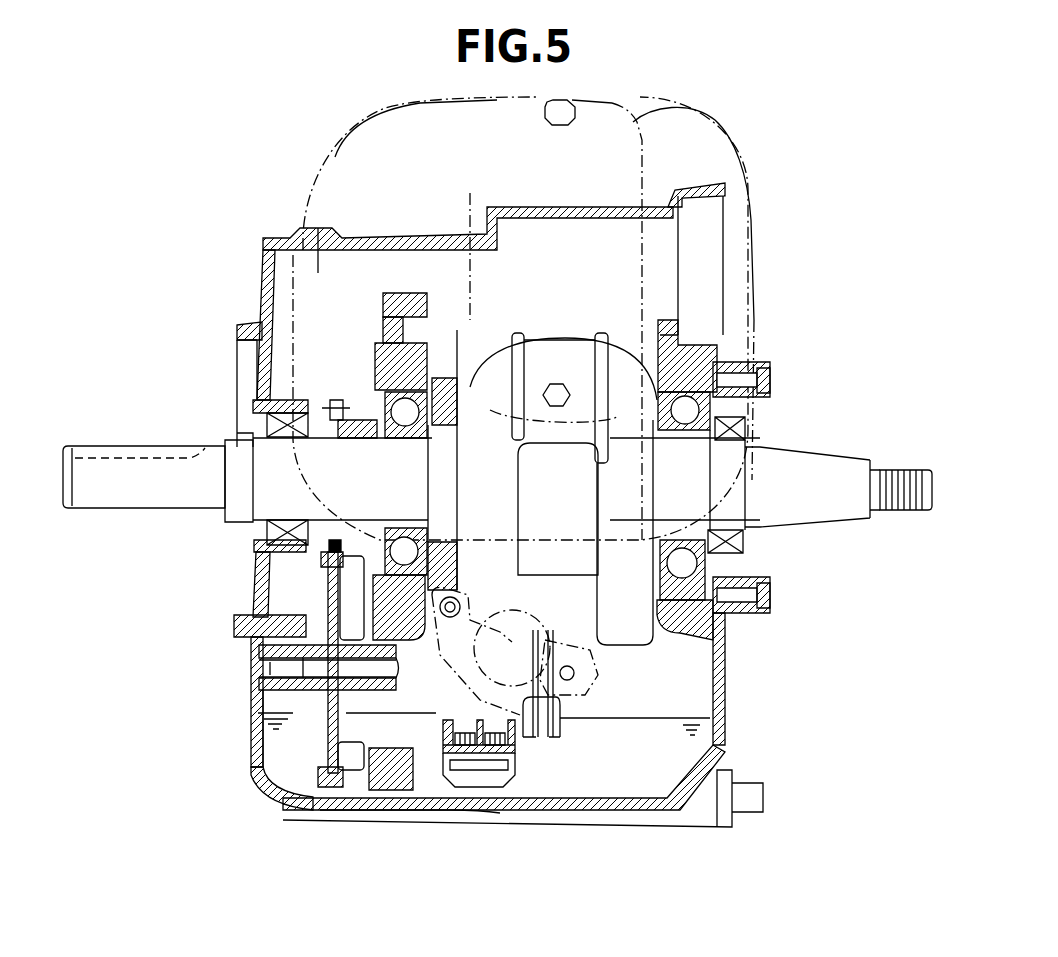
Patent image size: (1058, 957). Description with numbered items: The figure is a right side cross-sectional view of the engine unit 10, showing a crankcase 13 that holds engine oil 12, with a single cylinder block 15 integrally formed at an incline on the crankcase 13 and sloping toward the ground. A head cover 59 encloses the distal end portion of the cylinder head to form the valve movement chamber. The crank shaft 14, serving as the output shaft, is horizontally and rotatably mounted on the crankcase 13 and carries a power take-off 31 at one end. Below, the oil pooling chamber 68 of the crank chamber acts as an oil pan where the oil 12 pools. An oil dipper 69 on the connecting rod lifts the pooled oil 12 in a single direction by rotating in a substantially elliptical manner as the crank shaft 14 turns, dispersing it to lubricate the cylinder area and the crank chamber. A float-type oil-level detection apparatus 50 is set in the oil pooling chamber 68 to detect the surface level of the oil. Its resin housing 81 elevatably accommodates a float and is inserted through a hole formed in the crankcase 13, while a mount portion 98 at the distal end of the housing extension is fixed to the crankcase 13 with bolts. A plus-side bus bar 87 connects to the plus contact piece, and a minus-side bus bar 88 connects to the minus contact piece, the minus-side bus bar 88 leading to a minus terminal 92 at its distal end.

The engine unit 10 is at (242, 160).
The head cover 59 is at (637, 122).
The cylinder block 15 is at (727, 128).
The engine oil 12 is at (270, 692).
The crankcase 13 is at (730, 693).
The oil pooling chamber 68 is at (278, 760).
The oil dipper 69 is at (593, 720).
The crank shaft 14 is at (136, 414).
The power take-off 31 is at (183, 445).
The mount portion 98 is at (545, 595).
The minus terminal 92 is at (468, 582).
The plus-side bus bar 87 is at (533, 643).
The minus-side bus bar 88 is at (520, 660).
The housing 81 is at (504, 790).
The oil-level detection apparatus 50 is at (533, 764).